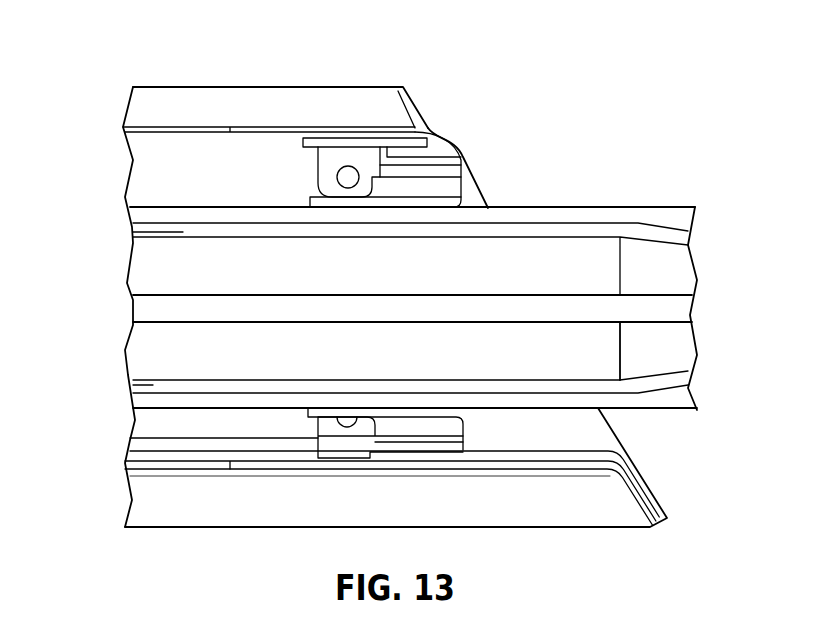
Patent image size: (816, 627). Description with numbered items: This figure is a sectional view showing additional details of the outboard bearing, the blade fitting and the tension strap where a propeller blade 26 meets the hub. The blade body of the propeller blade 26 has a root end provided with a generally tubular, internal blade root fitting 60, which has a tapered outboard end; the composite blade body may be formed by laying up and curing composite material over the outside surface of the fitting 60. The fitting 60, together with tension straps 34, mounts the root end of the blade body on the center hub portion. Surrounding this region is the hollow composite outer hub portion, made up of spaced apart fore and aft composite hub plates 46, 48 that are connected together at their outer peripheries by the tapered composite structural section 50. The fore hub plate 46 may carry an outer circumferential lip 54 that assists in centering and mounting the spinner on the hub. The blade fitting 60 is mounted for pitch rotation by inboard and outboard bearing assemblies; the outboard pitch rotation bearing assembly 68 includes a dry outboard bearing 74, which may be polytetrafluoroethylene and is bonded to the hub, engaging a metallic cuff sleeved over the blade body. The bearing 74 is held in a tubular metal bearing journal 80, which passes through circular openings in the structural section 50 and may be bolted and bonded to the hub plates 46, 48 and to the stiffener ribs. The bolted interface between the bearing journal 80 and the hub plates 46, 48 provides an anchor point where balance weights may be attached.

The propeller blade 26 is at (557, 217).
The tension strap 34 is at (152, 310).
The fore composite hub plate 46 is at (323, 134).
The aft composite hub plate 48 is at (263, 463).
The tapered composite structural section 50 is at (647, 481).
The outer circumferential lip 54 is at (290, 108).
The blade root fitting 60 is at (165, 354).
The outboard pitch rotation bearing assembly 68 is at (434, 105).
The outboard dry bearing 74 is at (447, 193).
The bearing journal 80 is at (547, 433).